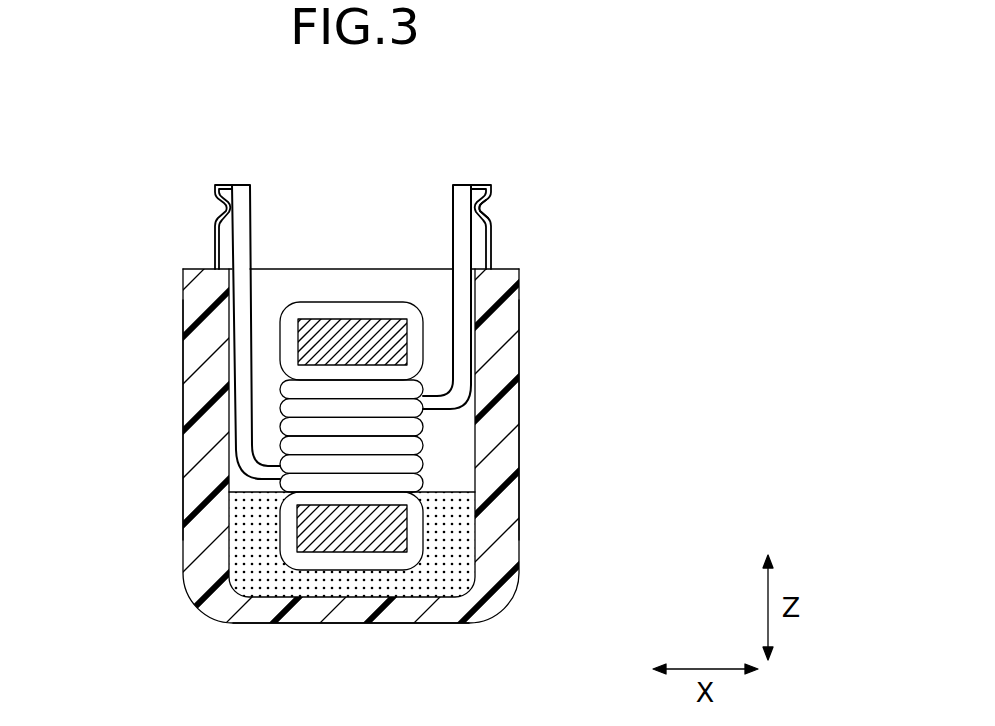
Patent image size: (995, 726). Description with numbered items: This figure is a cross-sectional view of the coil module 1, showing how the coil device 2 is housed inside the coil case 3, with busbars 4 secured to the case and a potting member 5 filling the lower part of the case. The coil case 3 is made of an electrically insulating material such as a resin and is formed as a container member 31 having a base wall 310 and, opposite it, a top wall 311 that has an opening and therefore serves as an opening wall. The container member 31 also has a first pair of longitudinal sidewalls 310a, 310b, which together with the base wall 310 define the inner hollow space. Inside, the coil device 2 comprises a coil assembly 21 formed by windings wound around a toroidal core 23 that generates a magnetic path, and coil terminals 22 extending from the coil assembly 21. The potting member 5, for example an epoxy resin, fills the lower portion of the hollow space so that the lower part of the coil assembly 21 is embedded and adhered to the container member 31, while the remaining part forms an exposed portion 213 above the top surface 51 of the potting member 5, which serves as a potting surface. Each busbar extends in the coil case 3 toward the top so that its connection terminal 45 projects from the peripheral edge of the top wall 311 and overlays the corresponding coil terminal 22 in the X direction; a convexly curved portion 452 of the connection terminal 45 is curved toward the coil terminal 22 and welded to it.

The coil device 1 is at (115, 488).
The coil device 2 is at (432, 430).
The coil case 3 is at (497, 573).
The busbars 4 is at (556, 193).
The potting member 5 is at (447, 573).
The coil assembly 21 is at (293, 558).
The coil terminals 22 is at (241, 185).
The toroidal core 23 is at (358, 343).
The container member 31 is at (500, 523).
The connection terminal 45 is at (214, 188).
The top surface 51 is at (450, 490).
The exposed portion 213 is at (293, 390).
The base wall 310 is at (354, 606).
The longitudinal sidewall 310a is at (183, 458).
The longitudinal sidewall 310b is at (519, 463).
The top wall 311 is at (277, 268).
The convexly curved portion 452 is at (481, 206).